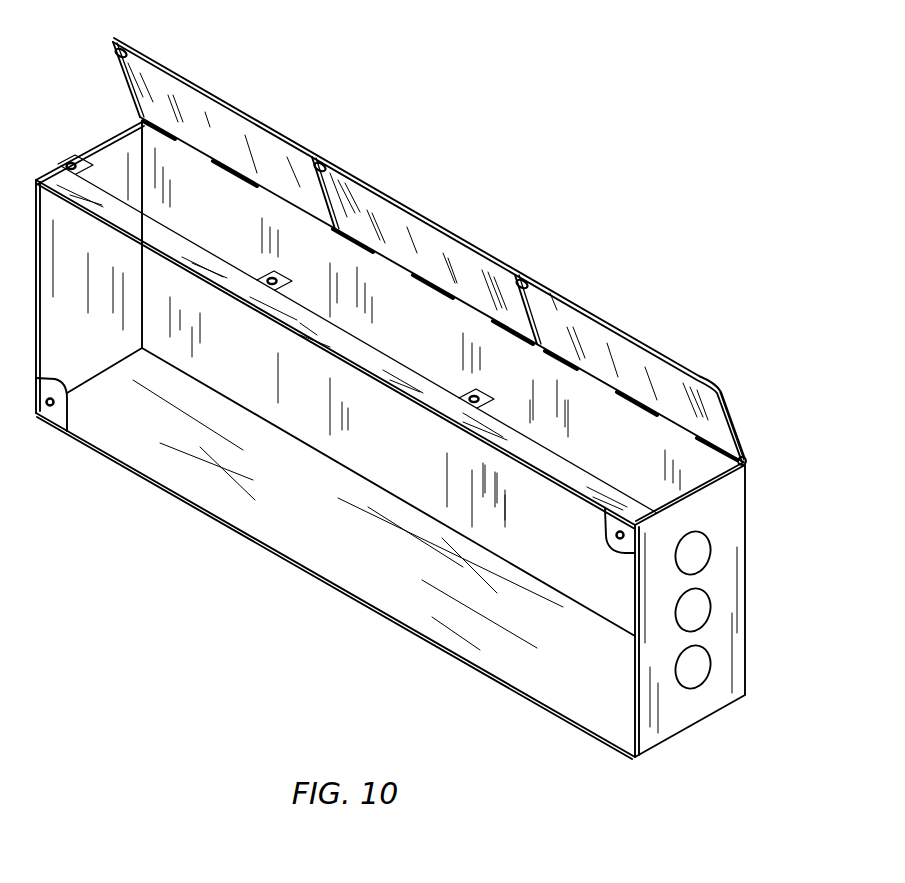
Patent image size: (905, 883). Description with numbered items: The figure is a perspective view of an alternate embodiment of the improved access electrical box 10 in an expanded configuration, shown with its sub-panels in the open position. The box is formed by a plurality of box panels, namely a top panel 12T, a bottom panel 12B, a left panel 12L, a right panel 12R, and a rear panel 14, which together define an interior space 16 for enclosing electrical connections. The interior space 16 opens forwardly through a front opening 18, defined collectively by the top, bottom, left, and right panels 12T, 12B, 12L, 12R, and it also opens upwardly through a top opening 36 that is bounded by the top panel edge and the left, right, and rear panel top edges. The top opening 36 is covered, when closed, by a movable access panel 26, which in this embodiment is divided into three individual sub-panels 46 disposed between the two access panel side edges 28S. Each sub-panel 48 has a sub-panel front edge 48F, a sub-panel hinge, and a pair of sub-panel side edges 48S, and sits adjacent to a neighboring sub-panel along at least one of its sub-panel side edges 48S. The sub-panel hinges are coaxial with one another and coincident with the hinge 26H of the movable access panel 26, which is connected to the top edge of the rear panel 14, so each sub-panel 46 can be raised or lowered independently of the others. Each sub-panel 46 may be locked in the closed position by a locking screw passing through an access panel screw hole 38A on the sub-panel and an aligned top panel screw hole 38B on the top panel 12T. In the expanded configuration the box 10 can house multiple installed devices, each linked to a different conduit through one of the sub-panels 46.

The improved access electrical box 10 is at (657, 782).
The top panel 12T is at (50, 183).
The left panel 12L is at (42, 275).
The bottom panel 12B is at (343, 592).
The right panel 12R is at (645, 740).
The rear panel 14 is at (556, 541).
The interior space 16 is at (62, 378).
The front opening 18 is at (38, 338).
The movable access panel 26 is at (697, 438).
The hinge 26H is at (743, 455).
The side edges 28S is at (124, 92).
The top opening 36 is at (136, 121).
The access panel screw hole 38A is at (114, 44).
The top panel screw hole 38B is at (71, 162).
The sub-panels 46 is at (277, 140).
The cover flap 48 is at (673, 378).
The flap front edge 48F is at (212, 98).
The sub-panel side edges 48S is at (117, 73).